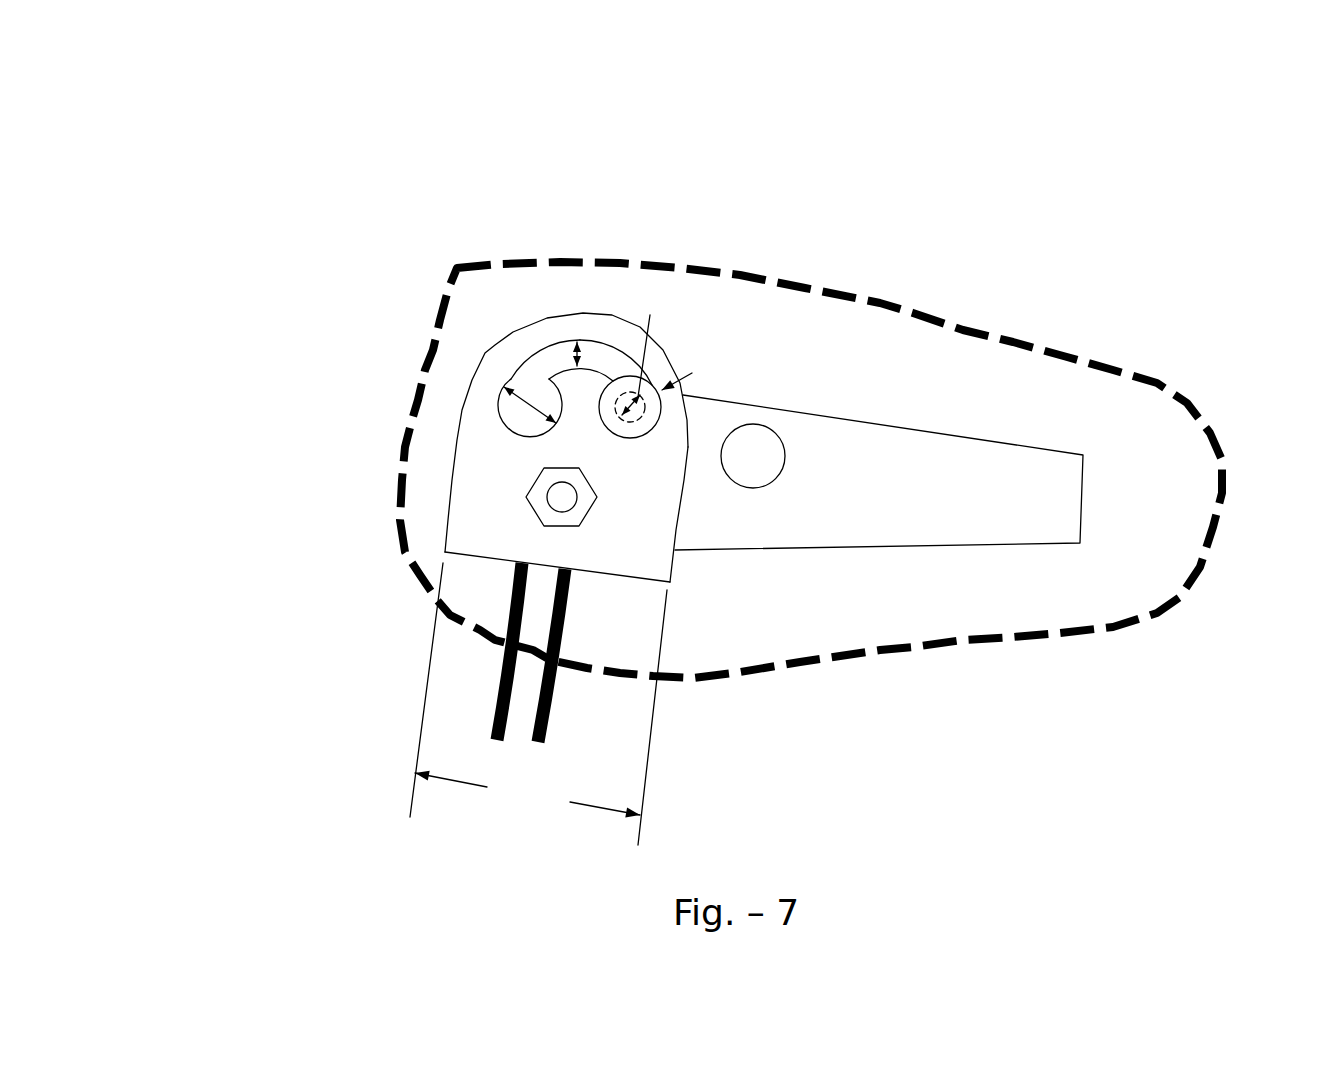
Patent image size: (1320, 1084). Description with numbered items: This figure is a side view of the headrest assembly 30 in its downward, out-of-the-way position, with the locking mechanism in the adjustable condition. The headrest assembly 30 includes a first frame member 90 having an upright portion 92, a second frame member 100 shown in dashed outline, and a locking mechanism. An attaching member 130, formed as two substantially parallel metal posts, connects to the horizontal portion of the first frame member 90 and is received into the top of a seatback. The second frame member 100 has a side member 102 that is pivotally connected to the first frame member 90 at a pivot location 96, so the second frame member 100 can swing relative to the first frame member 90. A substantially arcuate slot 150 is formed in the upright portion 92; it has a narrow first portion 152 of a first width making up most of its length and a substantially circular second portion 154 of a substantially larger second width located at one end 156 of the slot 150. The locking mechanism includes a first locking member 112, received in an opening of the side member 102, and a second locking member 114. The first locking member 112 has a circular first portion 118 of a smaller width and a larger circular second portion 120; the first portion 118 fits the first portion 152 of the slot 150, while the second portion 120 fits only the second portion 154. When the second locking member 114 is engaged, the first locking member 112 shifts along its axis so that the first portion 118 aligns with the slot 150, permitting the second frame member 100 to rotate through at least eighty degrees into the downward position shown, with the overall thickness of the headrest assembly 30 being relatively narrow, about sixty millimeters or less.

The headrest assembly 30 is at (233, 133).
The first frame member 90 is at (447, 443).
The upright portion 92 is at (492, 473).
The pivot location 96 is at (520, 516).
The second frame member 100 is at (977, 400).
The side member 102 is at (905, 500).
The first locking member 112 is at (648, 447).
The second locking member 114 is at (749, 453).
The first portion of the first locking member 118 is at (633, 390).
The second portion of the first locking member 120 is at (632, 398).
The attaching member 130 is at (478, 688).
The slot 150 is at (530, 346).
The first portion of the slot 152 is at (577, 342).
The second portion of the slot 154 is at (500, 390).
The end of the slot 156 is at (500, 372).